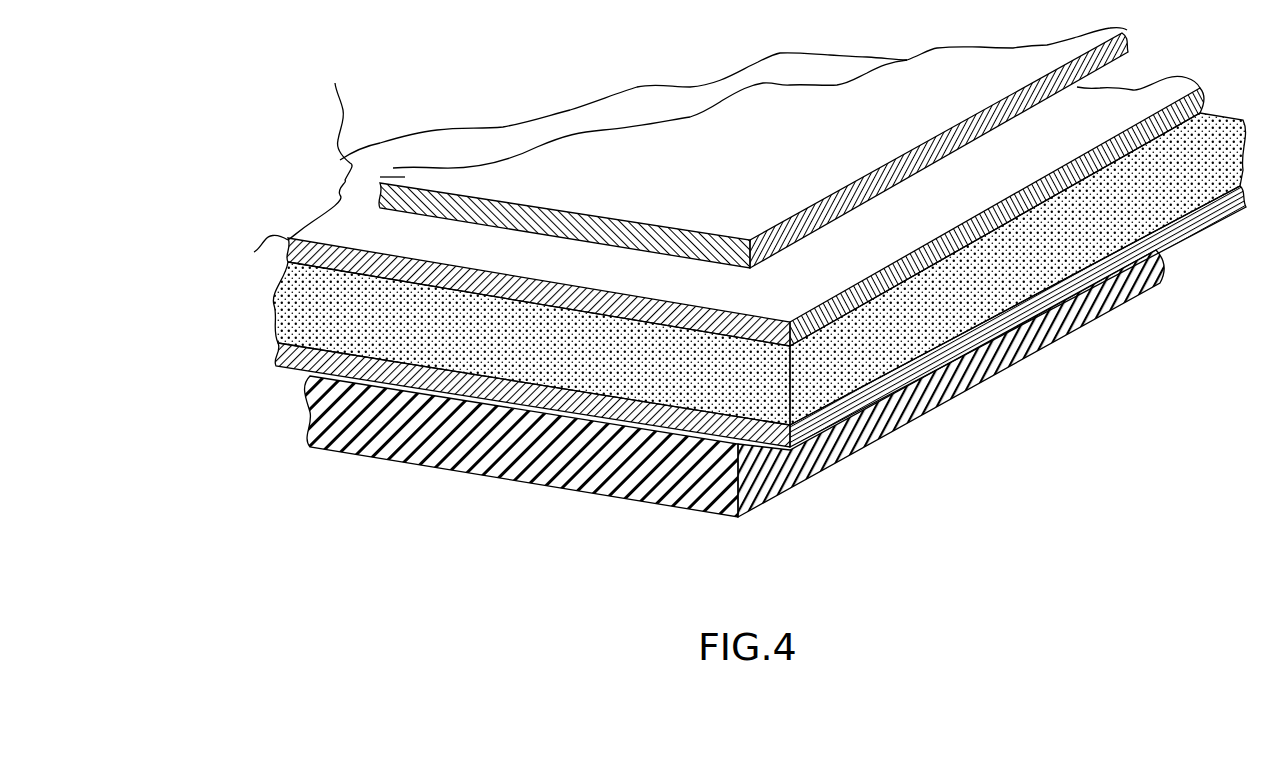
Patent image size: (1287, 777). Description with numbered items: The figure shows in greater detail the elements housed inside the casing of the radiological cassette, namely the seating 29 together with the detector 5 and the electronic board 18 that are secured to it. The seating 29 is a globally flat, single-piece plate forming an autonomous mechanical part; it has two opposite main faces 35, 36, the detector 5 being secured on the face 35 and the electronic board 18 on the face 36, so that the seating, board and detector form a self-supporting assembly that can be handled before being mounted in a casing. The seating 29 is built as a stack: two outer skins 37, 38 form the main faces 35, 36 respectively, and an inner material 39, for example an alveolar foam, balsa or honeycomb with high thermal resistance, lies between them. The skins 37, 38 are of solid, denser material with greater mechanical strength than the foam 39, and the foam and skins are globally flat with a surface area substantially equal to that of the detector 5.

The detector 5 is at (395, 446).
The electronic board 18 is at (715, 148).
The seating 29 is at (196, 225).
The main face 35 is at (290, 378).
The main face 36 is at (338, 230).
The outer skin 37 is at (290, 360).
The outer skin 38 is at (290, 252).
The inner material 39 is at (307, 312).